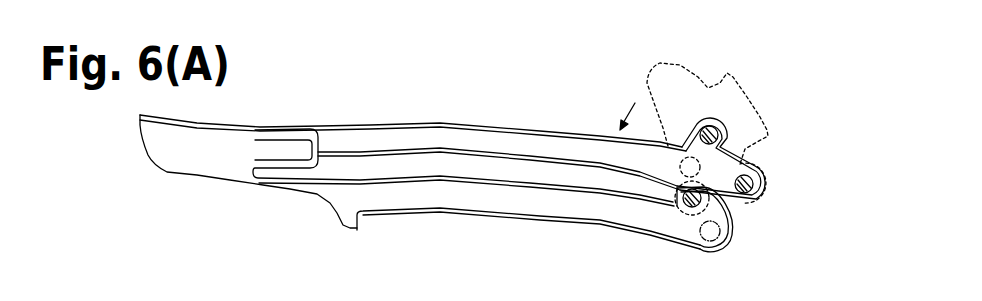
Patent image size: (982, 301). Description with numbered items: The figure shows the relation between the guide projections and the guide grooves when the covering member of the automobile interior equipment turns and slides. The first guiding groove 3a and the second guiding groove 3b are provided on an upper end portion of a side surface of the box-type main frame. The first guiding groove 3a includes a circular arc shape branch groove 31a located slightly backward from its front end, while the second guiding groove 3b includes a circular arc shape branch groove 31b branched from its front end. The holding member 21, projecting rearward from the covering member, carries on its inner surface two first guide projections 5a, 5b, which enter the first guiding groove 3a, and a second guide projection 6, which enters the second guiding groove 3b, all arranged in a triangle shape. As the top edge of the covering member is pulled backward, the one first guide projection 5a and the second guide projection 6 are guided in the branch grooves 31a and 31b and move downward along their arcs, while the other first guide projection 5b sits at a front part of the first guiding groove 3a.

The first guiding groove 3a is at (473, 142).
The second guiding groove 3b is at (483, 197).
The holding member 21 is at (680, 82).
The first guide projection 5a is at (720, 118).
The first guide projection 5b is at (755, 183).
The branch groove 31a is at (712, 152).
The branch groove 31b is at (729, 213).
The second guide projection 6 is at (679, 206).